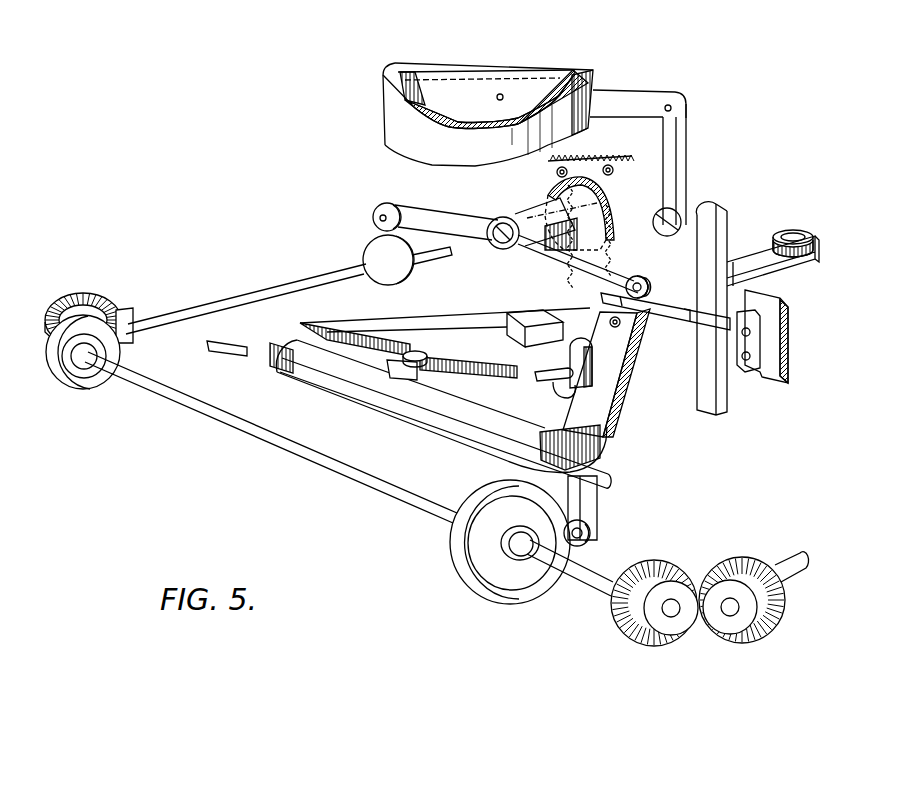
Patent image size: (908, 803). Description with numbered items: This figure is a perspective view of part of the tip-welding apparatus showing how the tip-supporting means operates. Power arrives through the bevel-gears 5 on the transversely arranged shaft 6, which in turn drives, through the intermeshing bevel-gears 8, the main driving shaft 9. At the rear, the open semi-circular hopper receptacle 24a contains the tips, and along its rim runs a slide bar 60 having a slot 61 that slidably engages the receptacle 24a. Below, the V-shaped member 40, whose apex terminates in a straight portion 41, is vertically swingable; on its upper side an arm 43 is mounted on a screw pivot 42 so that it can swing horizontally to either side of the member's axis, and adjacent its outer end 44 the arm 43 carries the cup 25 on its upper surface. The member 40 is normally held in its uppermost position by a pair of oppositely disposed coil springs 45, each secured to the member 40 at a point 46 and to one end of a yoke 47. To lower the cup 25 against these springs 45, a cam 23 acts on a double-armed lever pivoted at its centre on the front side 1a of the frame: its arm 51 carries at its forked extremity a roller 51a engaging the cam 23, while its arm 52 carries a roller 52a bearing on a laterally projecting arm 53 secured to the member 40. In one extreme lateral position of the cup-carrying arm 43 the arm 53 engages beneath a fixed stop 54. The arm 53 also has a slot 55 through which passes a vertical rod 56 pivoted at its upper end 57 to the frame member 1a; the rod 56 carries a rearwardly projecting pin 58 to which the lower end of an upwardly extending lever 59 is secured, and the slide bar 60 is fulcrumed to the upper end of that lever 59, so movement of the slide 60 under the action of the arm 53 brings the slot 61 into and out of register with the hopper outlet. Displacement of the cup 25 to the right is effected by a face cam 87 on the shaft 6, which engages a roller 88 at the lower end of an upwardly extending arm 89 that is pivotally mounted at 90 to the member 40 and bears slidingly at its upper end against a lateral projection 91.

The front side 1a is at (597, 203).
The bevel-gears 5 is at (727, 583).
The transversely arranged shaft 6 is at (290, 450).
The intermeshing bevel-gears 8 is at (97, 327).
The main driving shaft 9 is at (215, 303).
The cam 23 is at (368, 252).
The hopper receptacle 24a is at (590, 74).
The cup 25 is at (795, 229).
The V-shaped member 40 is at (613, 367).
The straight portion 41 is at (733, 278).
The screw pivot 42 is at (414, 350).
The arm 43 is at (780, 262).
The outer end 44 is at (819, 250).
The coil springs 45 is at (540, 196).
The spring attachment point 46 is at (619, 326).
The yoke 47 is at (587, 160).
The arm of double-armed lever 51 is at (441, 213).
The roller 51a is at (382, 205).
The arm of double-armed lever 52 is at (545, 249).
The roller 52a is at (645, 276).
The laterally projecting arm 53 is at (687, 318).
The fixed stop 54 is at (757, 372).
The slot 55 is at (700, 338).
The vertical rod 56 is at (705, 394).
The upper end 57 is at (722, 212).
The pin 58 is at (700, 201).
The upwardly extending lever 59 is at (672, 140).
The slide bar 60 is at (640, 100).
The slot 61 is at (500, 100).
The face cam 87 is at (450, 550).
The roller 88 is at (591, 536).
The upwardly extending arm 89 is at (598, 497).
The pivot 90 is at (556, 390).
The lateral projection 91 is at (520, 314).